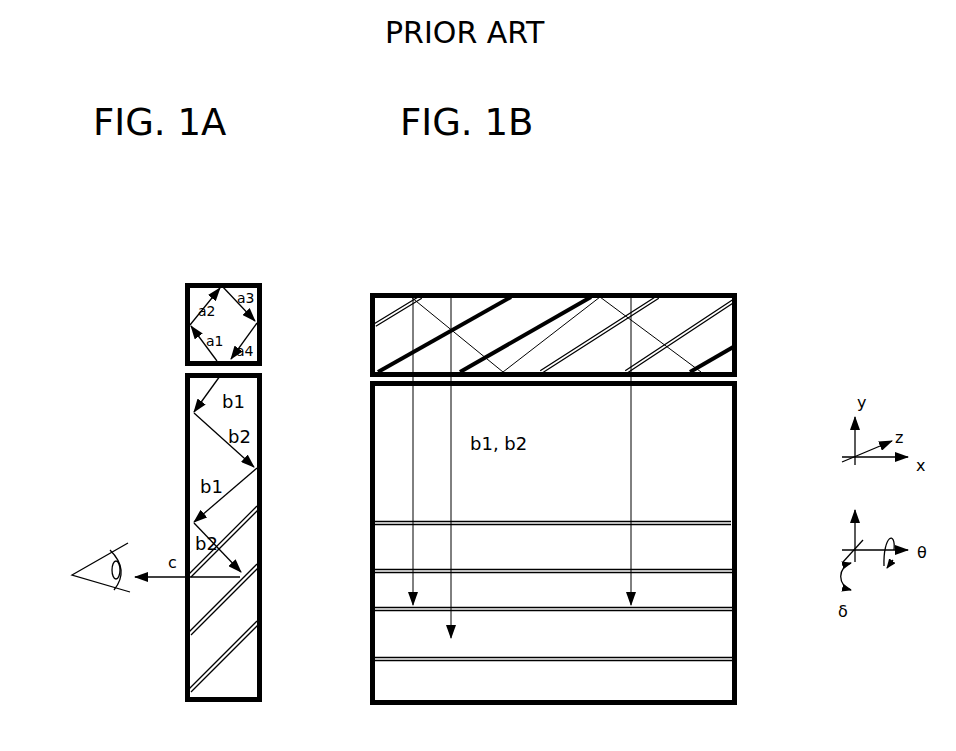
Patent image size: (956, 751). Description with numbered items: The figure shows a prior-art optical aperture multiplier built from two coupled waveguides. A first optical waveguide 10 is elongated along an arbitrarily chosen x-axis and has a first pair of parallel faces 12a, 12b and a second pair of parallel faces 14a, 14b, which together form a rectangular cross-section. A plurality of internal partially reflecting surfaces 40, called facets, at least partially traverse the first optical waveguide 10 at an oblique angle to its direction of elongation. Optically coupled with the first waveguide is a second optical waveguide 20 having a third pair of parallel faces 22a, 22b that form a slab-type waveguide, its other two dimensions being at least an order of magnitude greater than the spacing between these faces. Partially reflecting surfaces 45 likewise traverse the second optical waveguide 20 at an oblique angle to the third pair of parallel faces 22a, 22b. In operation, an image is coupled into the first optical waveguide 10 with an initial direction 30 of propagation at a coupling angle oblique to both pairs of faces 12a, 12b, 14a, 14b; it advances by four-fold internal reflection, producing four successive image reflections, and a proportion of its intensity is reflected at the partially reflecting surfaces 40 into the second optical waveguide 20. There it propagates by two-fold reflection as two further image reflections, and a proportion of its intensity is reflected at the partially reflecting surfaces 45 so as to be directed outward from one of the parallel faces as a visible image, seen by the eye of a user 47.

In FIG. 1A, the first optical waveguide 10 is at (211, 314).
In FIG. 1B, the first optical waveguide 10 is at (554, 313).
In FIG. 1A, the first pair of parallel faces 12a is at (249, 280).
In FIG. 1B, the first pair of parallel faces 12a is at (483, 291).
In FIG. 1A, the first pair of parallel faces 12b is at (200, 358).
In FIG. 1B, the first pair of parallel faces 12b is at (435, 366).
In FIG. 1A, the second pair of parallel faces 14a is at (180, 310).
In FIG. 1A, the second pair of parallel faces 14b is at (272, 323).
In FIG. 1A, the second optical waveguide 20 is at (251, 538).
In FIG. 1B, the second optical waveguide 20 is at (572, 543).
In FIG. 1A, the third pair of parallel faces 22a is at (182, 462).
In FIG. 1A, the third pair of parallel faces 22b is at (270, 518).
In FIG. 1A, the initial direction of propagation 30 is at (224, 281).
In FIG. 1B, the initial direction of propagation 30 is at (705, 368).
In FIG. 1B, the internal partially reflecting surfaces 40 is at (564, 307).
In FIG. 1A, the partially reflecting surfaces 45 is at (248, 596).
In FIG. 1B, the partially reflecting surfaces 45 is at (394, 578).
In FIG. 1A, the eye of a user 47 is at (101, 573).